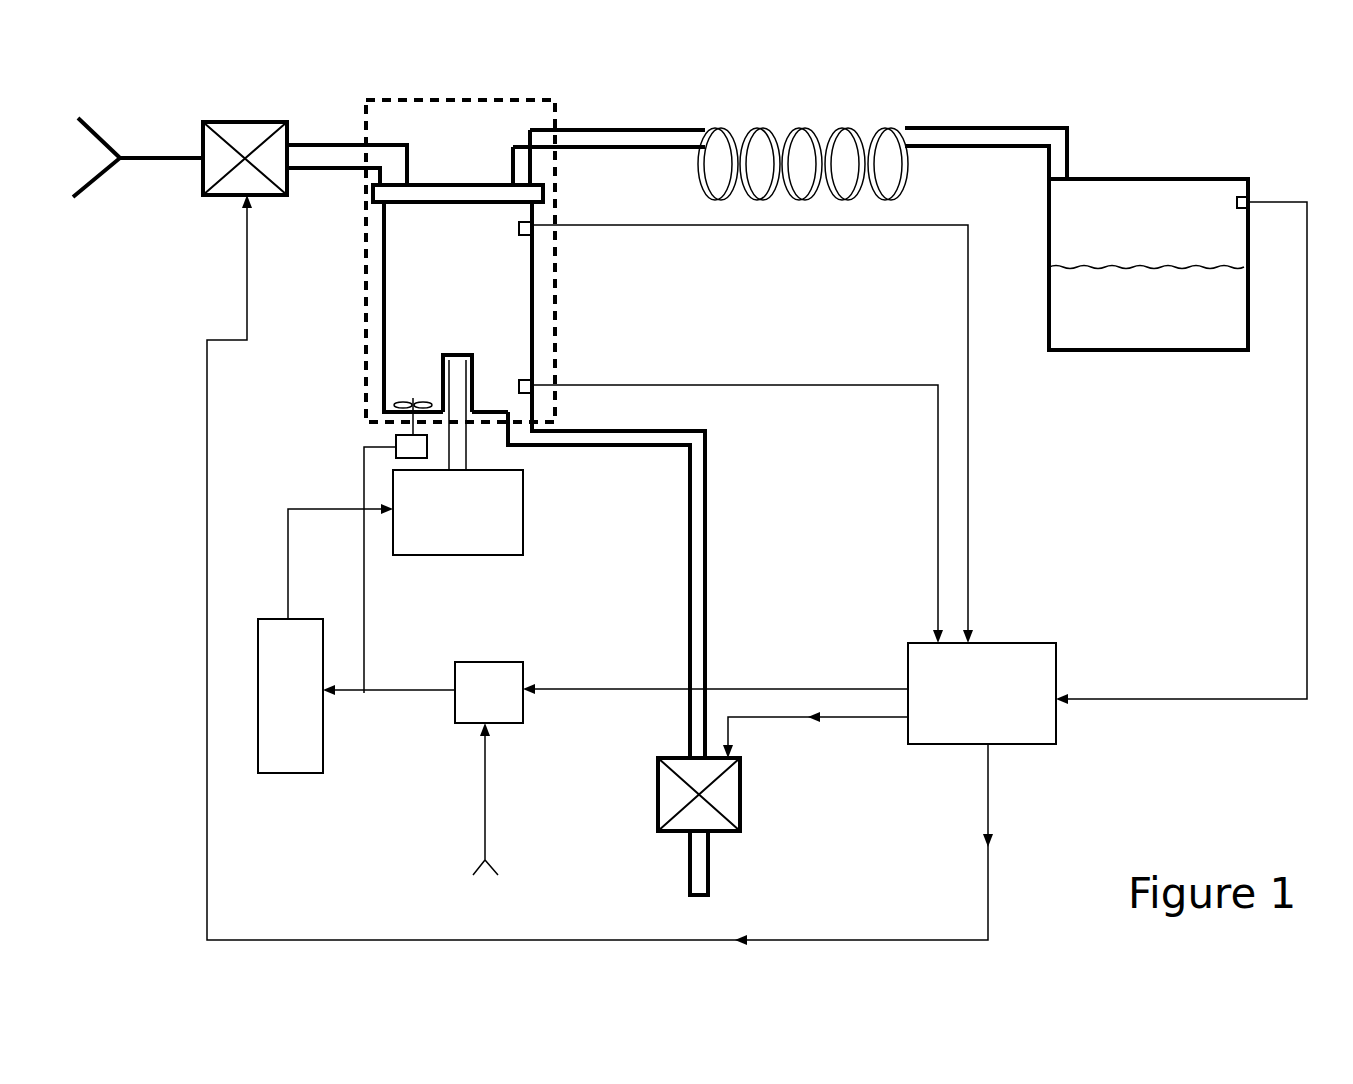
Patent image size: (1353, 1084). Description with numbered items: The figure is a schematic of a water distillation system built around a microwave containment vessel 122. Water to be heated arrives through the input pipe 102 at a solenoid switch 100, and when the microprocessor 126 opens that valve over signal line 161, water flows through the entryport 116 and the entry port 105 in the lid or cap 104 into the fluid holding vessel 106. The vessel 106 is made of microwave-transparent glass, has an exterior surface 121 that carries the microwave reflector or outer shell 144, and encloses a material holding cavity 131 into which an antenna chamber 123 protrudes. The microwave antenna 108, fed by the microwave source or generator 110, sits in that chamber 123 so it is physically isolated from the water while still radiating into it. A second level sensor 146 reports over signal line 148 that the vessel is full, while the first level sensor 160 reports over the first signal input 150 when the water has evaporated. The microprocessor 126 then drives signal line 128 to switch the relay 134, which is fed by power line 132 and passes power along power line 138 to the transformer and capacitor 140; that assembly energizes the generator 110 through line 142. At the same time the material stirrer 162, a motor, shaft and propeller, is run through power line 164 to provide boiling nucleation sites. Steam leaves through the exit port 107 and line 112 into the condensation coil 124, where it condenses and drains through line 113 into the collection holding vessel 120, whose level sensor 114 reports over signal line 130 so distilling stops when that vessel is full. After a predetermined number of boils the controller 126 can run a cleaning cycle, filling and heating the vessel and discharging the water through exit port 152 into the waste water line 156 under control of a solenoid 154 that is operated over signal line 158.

The solenoid switch 100 is at (245, 122).
The input pipe 102 is at (150, 156).
The lid or cap 104 is at (462, 185).
The entry port 105 is at (408, 183).
The fluid holding vessel 106 is at (360, 219).
The exit port 107 is at (517, 135).
The microwave antenna 108 is at (467, 452).
The microwave source or microwave generator 110 is at (523, 547).
The line 112 is at (652, 130).
The line 113 is at (958, 124).
The level sensor 114 is at (1249, 200).
The entryport 116 is at (322, 145).
The collection holding vessel 120 is at (1125, 179).
The exterior surface 121 is at (458, 280).
The microwave containment vessel 122 is at (575, 297).
The antenna chamber 123 is at (443, 368).
The condensation coil 124 is at (770, 130).
The microprocessor/controller or signal processor/determiner 126 is at (1028, 745).
The signal line 128 is at (810, 689).
The signal line 130 is at (1307, 418).
The material holding cavity 131 is at (405, 248).
The power line 132 is at (487, 812).
The relay 134 is at (497, 662).
The power line 138 is at (395, 693).
The transformer & capacitor 140 is at (283, 773).
The signal line 142 is at (288, 590).
The microwave reflector or outer shell 144 is at (554, 106).
The second level sensor 146 is at (532, 228).
The signal line 148 is at (975, 466).
The first signal input 150 is at (755, 385).
The exit port 152 is at (708, 552).
The solenoid 154 is at (742, 793).
The waste water line 156 is at (708, 872).
The signal line 158 is at (830, 717).
The first level sensor 160 is at (532, 385).
The signal line 161 is at (838, 940).
The material stirrer 162 is at (396, 446).
The power line 164 is at (365, 610).